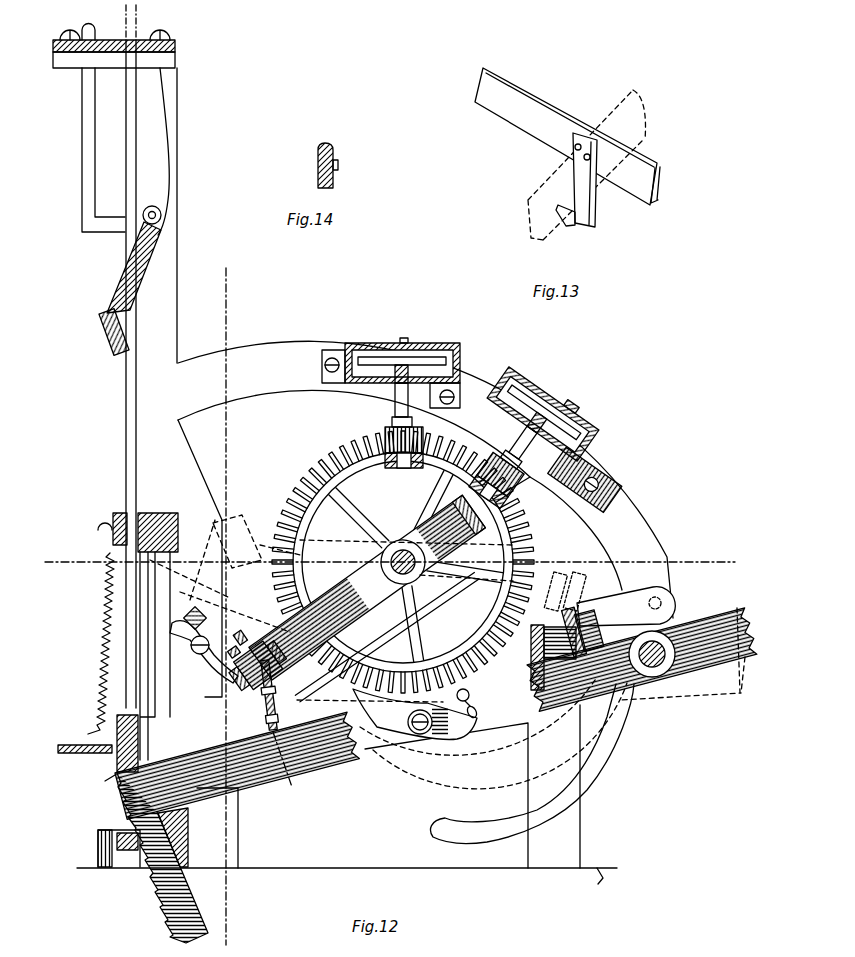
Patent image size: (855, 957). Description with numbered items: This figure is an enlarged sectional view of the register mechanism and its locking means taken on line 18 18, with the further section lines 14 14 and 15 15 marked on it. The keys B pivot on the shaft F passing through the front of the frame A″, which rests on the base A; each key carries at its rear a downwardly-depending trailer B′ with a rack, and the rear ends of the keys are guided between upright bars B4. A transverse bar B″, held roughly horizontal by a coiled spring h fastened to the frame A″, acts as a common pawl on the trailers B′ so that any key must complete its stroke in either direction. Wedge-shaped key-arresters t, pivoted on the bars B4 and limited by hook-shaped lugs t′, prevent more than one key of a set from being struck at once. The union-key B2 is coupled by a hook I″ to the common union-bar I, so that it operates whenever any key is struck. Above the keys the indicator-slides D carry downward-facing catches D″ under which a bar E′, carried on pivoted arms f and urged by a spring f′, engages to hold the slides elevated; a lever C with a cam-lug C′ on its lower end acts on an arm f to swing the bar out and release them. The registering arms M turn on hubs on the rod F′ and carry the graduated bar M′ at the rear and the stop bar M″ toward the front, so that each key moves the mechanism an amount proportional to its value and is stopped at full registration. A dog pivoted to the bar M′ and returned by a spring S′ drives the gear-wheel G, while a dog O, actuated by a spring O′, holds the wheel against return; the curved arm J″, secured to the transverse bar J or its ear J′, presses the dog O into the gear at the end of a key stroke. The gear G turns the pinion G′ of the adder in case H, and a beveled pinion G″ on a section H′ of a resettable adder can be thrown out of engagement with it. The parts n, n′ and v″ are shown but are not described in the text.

In FIG. 12, the base A is at (602, 881).
In FIG. 12, the frame A'' is at (363, 446).
In FIG. 12, the keys B is at (642, 660).
In FIG. 14, the keys B is at (333, 165).
In FIG. 12, the trailer portion B' is at (237, 827).
In FIG. 12, the pivoted bar (common pawl) B'' is at (80, 759).
In FIG. 12, the upright bars B4 is at (138, 738).
In FIG. 13, the union-key B2 is at (640, 122).
In FIG. 12, the lever C is at (204, 654).
In FIG. 12, the cam-lug C' is at (189, 609).
In FIG. 12, the indicator-slides D is at (121, 356).
In FIG. 12, the catch D'' is at (134, 524).
In FIG. 12, the detaining-bar E' is at (107, 340).
In FIG. 12, the shaft F is at (653, 670).
In FIG. 12, the shaft or rod F' is at (399, 542).
In FIG. 12, the gear-wheel G is at (403, 562).
In FIG. 12, the pinion G' is at (388, 425).
In FIG. 12, the beveled pinion G'' is at (508, 464).
In FIG. 12, the adder case H is at (391, 367).
In FIG. 12, the adder casing sections H' is at (558, 436).
In FIG. 12, the union-bar I is at (543, 657).
In FIG. 13, the union-bar I is at (560, 180).
In FIG. 13, the hook I'' is at (565, 227).
In FIG. 12, the transverse bar J is at (573, 614).
In FIG. 12, the ear J' is at (626, 596).
In FIG. 12, the curved arm J'' is at (539, 763).
In FIG. 12, the arms M is at (367, 588).
In FIG. 12, the graduated bar M' is at (257, 654).
In FIG. 12, the stop bar M'' is at (493, 529).
In FIG. 12, the dog O is at (401, 714).
In FIG. 12, the spring O' is at (470, 705).
In FIG. 12, the spring S' is at (387, 637).
In FIG. 12, the arms f is at (134, 267).
In FIG. 12, the spring f' is at (156, 151).
In FIG. 12, the coiled spring h is at (92, 656).
In FIG. 12, the nut n is at (402, 354).
In FIG. 12, the nut n' is at (539, 411).
In FIG. 12, the wedge-shaped piece (key-arrester) t is at (101, 783).
In FIG. 12, the hook-shaped lug t' is at (260, 694).
In FIG. 12, the pawl v'' is at (238, 638).
In FIG. 12, the section line 14 14 is at (287, 794).
In FIG. 12, the section line 15 15 is at (219, 919).
In FIG. 12, the section line 18 18 is at (711, 554).